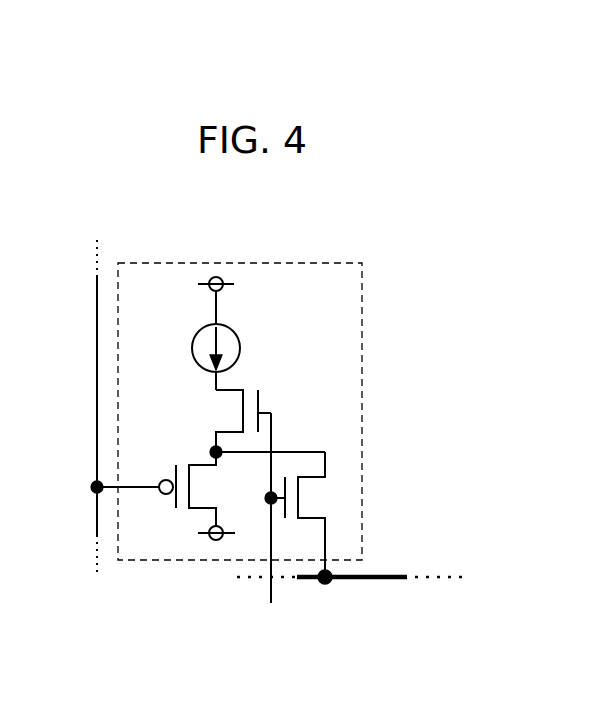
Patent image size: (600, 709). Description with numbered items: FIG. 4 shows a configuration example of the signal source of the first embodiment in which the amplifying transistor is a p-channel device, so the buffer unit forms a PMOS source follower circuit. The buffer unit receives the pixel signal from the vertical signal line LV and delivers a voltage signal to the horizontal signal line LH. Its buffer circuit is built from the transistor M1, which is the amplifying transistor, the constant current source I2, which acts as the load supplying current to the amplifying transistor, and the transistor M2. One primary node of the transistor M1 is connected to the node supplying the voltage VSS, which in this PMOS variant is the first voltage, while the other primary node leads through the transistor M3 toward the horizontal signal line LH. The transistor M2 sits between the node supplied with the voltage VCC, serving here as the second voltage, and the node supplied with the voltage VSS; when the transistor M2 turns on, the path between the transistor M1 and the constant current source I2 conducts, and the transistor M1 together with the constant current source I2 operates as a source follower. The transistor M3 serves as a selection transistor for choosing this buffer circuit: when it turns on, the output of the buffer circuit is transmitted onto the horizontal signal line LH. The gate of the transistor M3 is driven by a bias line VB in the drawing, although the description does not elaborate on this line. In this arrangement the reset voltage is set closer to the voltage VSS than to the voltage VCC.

The vertical signal line LV is at (97, 352).
The horizontal signal line LH is at (393, 574).
The bias voltage line VB is at (230, 452).
The first voltage VCC is at (189, 285).
The second voltage VSS is at (190, 534).
The constant current source I2 is at (240, 348).
The transistor M1 is at (203, 486).
The transistor M2 is at (223, 412).
The transistor M3 is at (310, 497).